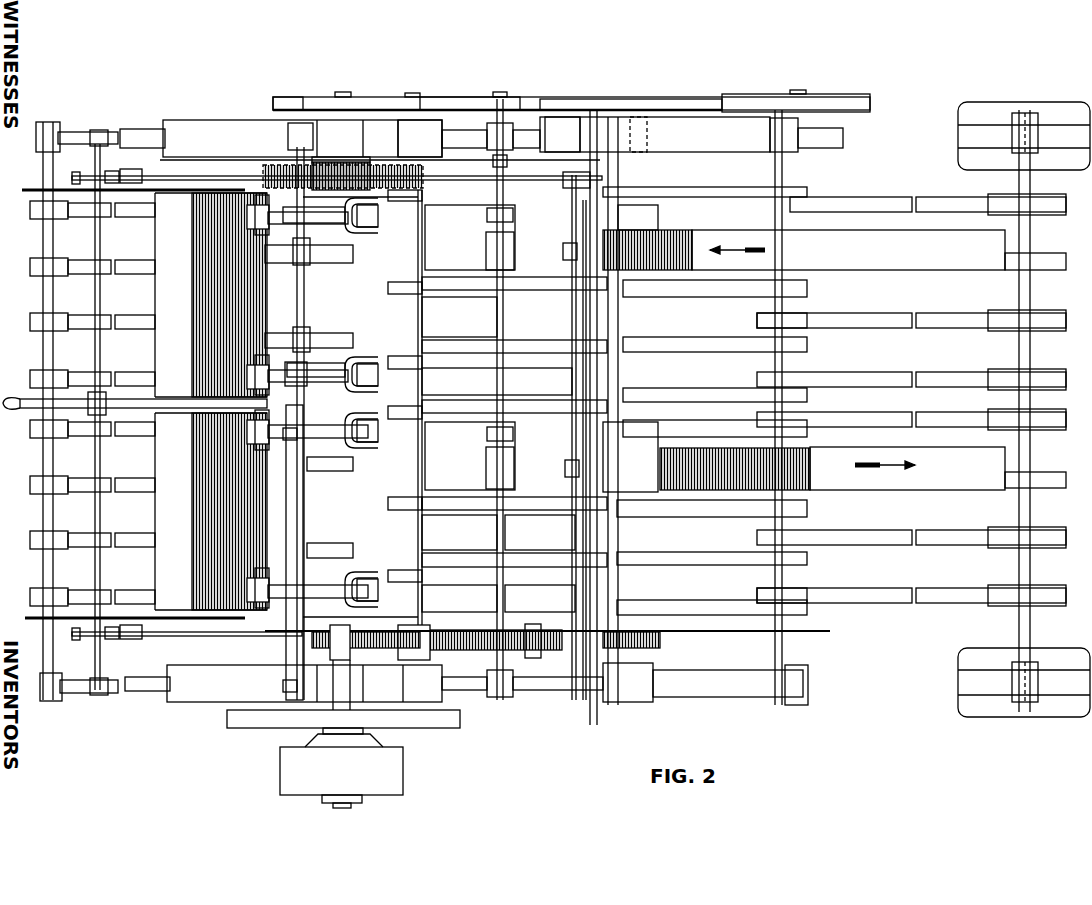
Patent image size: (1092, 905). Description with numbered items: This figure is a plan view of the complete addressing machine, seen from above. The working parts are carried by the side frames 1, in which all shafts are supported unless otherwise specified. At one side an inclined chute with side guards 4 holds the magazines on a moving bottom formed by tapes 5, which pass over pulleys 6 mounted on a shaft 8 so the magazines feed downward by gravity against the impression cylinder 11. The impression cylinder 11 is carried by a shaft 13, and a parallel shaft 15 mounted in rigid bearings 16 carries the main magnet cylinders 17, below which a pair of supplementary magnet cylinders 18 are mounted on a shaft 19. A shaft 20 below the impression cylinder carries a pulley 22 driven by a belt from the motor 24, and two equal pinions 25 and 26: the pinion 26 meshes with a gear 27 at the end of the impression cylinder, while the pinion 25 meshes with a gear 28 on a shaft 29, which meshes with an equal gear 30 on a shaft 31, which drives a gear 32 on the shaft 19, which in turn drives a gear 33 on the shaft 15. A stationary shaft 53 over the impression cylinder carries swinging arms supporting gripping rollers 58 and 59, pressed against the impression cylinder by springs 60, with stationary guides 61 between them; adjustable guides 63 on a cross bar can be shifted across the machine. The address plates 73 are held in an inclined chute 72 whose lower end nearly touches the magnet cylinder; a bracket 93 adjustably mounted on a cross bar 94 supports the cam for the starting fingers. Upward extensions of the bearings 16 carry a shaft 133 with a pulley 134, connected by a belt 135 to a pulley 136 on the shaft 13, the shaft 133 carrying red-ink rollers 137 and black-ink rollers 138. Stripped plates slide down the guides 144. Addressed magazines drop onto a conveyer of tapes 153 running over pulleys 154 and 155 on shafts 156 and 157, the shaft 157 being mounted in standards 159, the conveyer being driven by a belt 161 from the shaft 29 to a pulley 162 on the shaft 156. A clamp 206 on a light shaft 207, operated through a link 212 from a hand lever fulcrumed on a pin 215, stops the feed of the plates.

The side frames 1 is at (481, 409).
The side guards 4 is at (140, 195).
The tapes 5 is at (130, 316).
The pulleys 6 is at (43, 215).
The shaft 8 is at (135, 381).
The impression cylinder 11 is at (360, 415).
The shaft 13 is at (341, 97).
The shaft 15 is at (490, 370).
The rigid bearings 16 is at (555, 116).
The main magnet cylinders 17 is at (522, 399).
The supplementary magnet cylinders 18 is at (630, 348).
The shaft 19 is at (705, 407).
The shaft 20 is at (330, 738).
The pulley 22 is at (455, 728).
The motor 24 is at (341, 777).
The pinion 25 is at (286, 640).
The pinion 26 is at (375, 165).
The gear 27 is at (265, 175).
The gear 28 is at (459, 598).
The shaft 29 is at (459, 532).
The gear 30 is at (545, 630).
The shaft 31 is at (540, 532).
The gear 32 is at (652, 632).
The gear 33 is at (556, 700).
The stationary shaft 53 is at (298, 297).
The gripping rollers 58 is at (248, 213).
The gripping rollers 59 is at (376, 218).
The springs 60 is at (342, 585).
The stationary guides 61 is at (332, 334).
The adjustable guides 63 is at (410, 482).
The inclined chute 72 is at (732, 242).
The address plates 73 is at (683, 240).
The bracket 93 is at (490, 293).
The cross bar 94 is at (600, 722).
The shaft 133 is at (494, 163).
The pulley 134 is at (500, 120).
The belt 135 is at (463, 97).
The pulley 136 is at (290, 97).
The ink rollers 137 is at (487, 215).
The ink rollers 138 is at (486, 250).
The guides 144 is at (737, 452).
The tapes 153 is at (930, 313).
The pulleys 154 is at (822, 330).
The pulleys 155 is at (1045, 490).
The shaft 156 is at (810, 650).
The shaft 157 is at (1031, 352).
The standards 159 is at (1010, 110).
The belt 161 is at (694, 100).
The pulley 162 is at (845, 94).
The clamp 206 is at (563, 253).
The light shaft 207 is at (572, 324).
The link 212 is at (160, 180).
The pin 215 is at (102, 447).